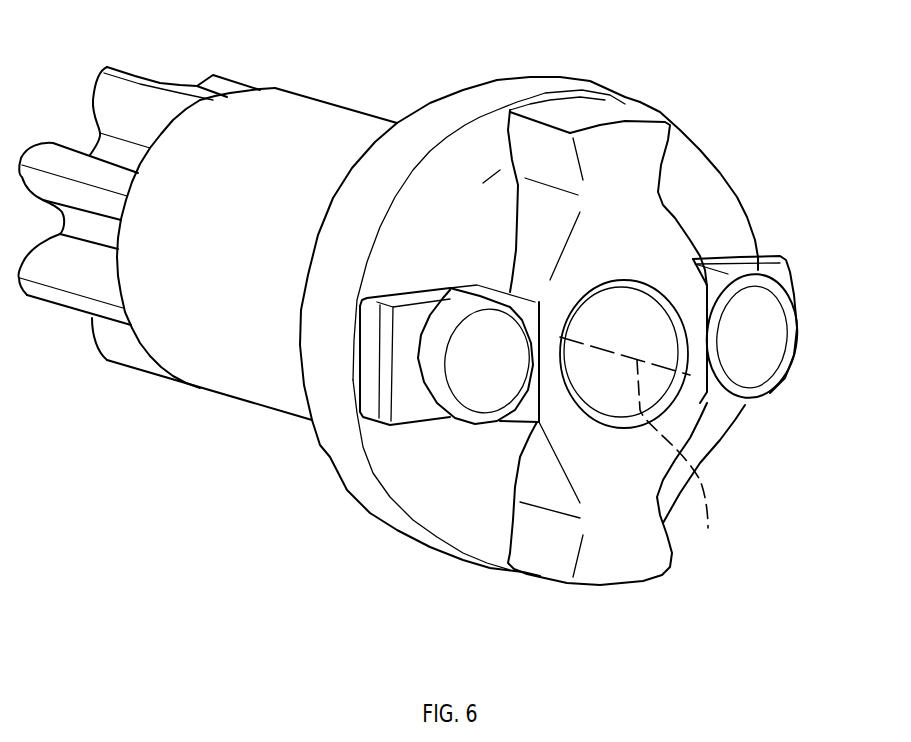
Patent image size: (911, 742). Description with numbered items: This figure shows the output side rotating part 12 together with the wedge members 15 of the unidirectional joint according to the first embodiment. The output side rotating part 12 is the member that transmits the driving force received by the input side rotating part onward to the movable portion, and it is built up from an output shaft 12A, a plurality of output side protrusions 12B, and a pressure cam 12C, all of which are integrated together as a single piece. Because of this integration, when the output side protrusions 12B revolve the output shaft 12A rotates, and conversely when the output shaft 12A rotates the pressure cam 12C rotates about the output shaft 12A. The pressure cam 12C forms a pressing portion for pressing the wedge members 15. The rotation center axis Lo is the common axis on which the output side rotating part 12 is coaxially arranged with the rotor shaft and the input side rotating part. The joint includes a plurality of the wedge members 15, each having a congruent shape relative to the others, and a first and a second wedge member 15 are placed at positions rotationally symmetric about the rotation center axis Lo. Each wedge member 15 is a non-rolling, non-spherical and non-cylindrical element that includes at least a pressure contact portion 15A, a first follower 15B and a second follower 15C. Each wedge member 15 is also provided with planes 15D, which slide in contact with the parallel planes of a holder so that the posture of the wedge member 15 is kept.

The output side rotating part 12 is at (212, 370).
The output shaft 12A is at (322, 120).
The output side protrusion 12B is at (630, 167).
The pressure cam 12C is at (736, 280).
The wedge member 15 is at (490, 395).
The pressure contact portion 15A is at (372, 383).
The first follower 15B is at (430, 373).
The second follower 15C is at (539, 303).
The plane 15D is at (440, 288).
The rotation center axis Lo is at (640, 448).